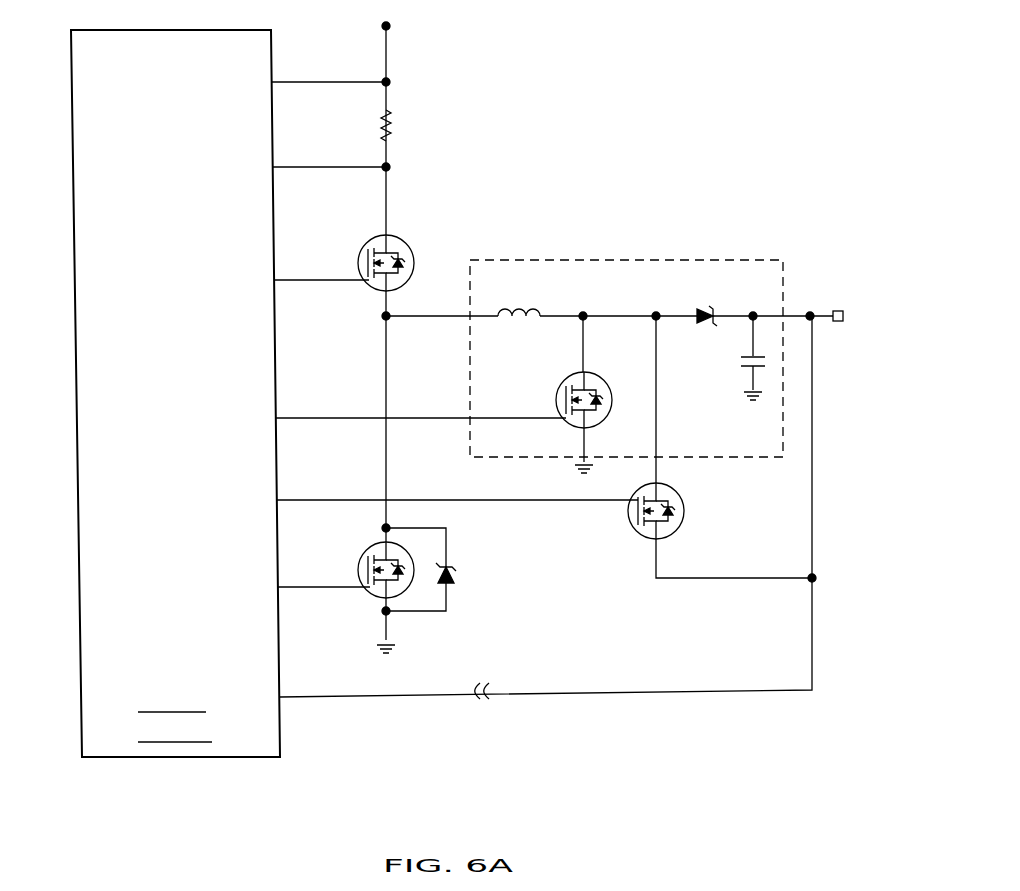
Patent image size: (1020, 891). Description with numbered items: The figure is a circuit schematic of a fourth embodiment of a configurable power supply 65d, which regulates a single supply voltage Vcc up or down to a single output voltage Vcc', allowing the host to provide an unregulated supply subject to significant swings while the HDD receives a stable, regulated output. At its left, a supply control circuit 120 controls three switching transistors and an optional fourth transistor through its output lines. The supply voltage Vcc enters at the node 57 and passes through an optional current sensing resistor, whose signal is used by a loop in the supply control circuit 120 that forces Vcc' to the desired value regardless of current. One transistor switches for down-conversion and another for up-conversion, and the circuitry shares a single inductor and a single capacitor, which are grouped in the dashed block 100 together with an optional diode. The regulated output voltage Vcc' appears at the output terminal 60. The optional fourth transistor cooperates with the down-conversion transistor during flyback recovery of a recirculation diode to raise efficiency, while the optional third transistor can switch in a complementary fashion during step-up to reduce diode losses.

The supply control circuit 120 is at (212, 30).
The supply voltage node Vcc 57 is at (390, 27).
The output filter / regulator block 100 is at (722, 260).
The output terminal Vcc' 60 is at (838, 322).
The configurable power supply 65d is at (115, 812).